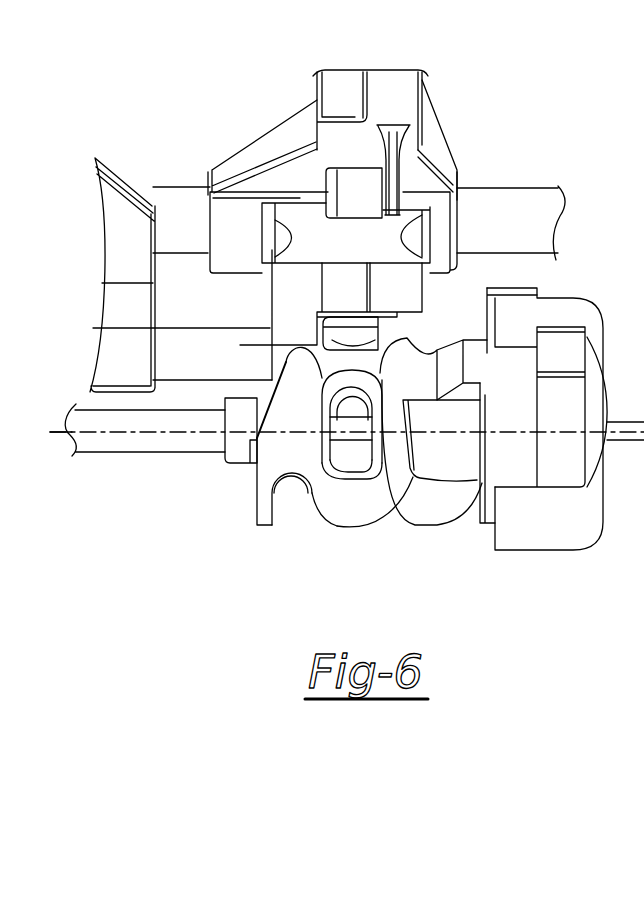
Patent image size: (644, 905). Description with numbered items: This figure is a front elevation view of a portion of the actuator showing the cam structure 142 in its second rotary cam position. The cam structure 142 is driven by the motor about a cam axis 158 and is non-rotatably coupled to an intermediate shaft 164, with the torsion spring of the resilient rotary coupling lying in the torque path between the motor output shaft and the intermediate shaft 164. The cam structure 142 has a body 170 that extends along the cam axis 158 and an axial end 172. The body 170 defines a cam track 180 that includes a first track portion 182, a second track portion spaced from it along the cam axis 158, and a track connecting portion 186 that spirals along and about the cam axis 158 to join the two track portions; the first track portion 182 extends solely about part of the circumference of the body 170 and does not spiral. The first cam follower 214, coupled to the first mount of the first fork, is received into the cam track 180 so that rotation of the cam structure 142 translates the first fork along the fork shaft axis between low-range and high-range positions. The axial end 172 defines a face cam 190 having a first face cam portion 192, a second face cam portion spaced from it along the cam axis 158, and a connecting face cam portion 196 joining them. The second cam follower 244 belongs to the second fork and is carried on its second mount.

The body 170 is at (270, 345).
The first cam follower 214 is at (378, 338).
The connecting face cam portion 196 is at (262, 372).
The cam track 180 is at (352, 407).
The second cam follower 244 is at (200, 345).
The cam structure 142 is at (284, 411).
The first face cam portion 192 is at (224, 445).
The intermediate shaft 164 is at (97, 445).
The cam axis 158 is at (63, 433).
The axial end 172 is at (246, 509).
The face cam 190 is at (292, 499).
The first track portion 182 is at (292, 482).
The track connecting portion 186 is at (358, 503).